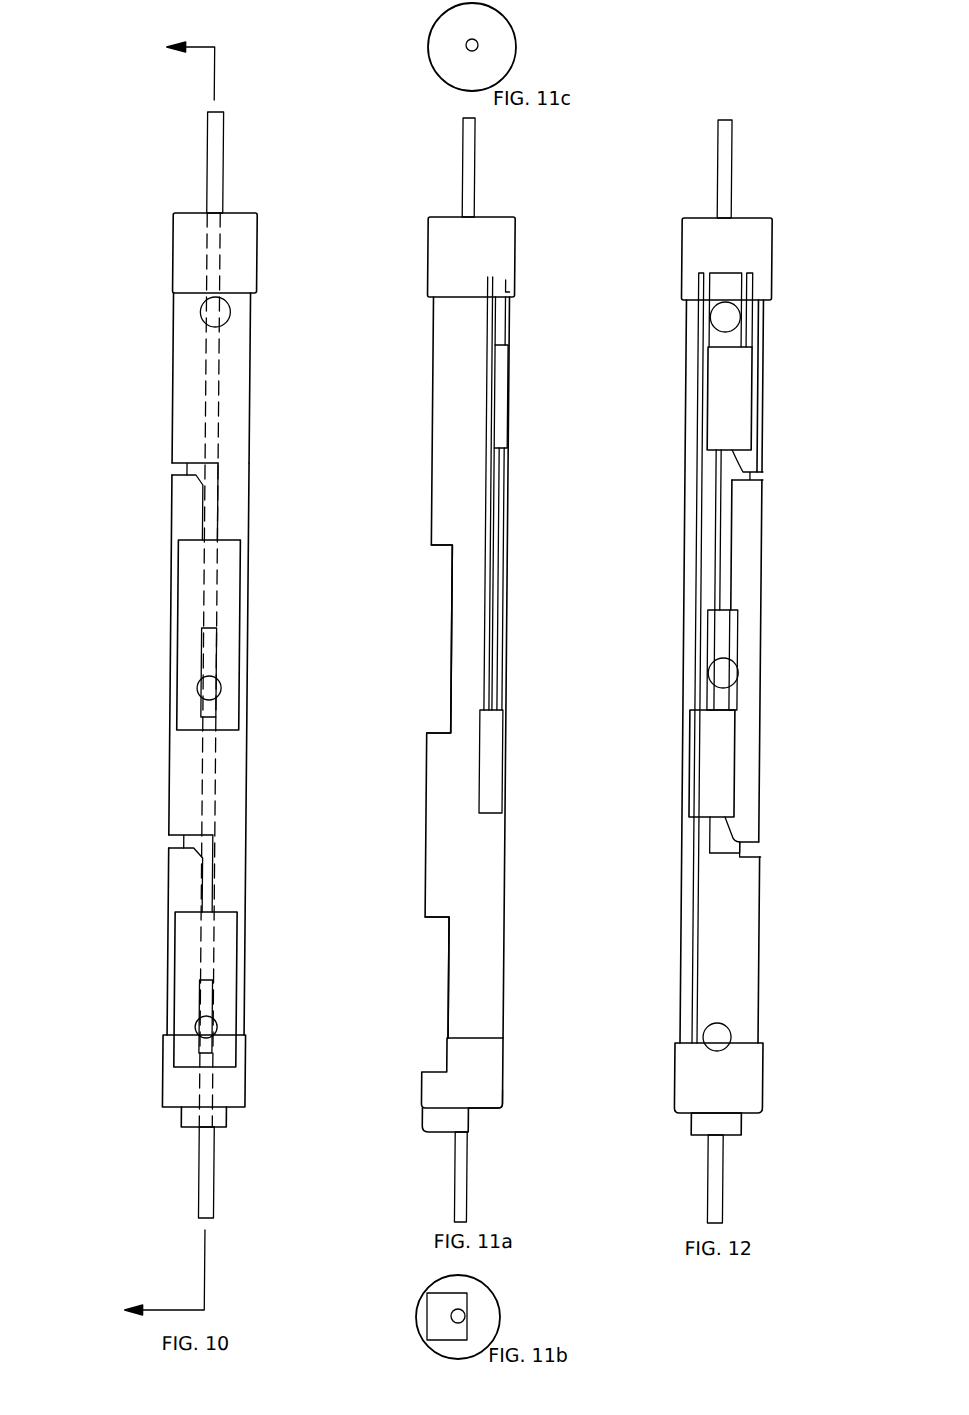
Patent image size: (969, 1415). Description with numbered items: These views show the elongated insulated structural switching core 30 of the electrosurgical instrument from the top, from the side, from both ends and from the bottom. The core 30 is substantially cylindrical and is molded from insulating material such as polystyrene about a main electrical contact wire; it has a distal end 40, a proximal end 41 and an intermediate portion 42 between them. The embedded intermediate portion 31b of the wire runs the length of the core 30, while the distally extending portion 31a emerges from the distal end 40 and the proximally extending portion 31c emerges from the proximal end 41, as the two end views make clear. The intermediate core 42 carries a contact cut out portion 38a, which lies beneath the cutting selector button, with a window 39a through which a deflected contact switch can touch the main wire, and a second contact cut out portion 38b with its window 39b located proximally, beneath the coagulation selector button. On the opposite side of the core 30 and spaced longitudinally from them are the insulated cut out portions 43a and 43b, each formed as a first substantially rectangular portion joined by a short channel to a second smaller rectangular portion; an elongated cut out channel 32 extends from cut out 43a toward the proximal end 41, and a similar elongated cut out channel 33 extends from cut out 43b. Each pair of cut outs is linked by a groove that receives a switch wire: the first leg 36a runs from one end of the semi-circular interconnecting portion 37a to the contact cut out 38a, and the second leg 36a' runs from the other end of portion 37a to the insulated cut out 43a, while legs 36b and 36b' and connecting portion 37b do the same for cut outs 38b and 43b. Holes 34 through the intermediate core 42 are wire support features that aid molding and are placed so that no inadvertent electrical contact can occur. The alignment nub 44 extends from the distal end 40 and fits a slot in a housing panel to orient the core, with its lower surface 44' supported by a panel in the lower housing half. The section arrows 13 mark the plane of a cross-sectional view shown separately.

In FIG. 10, the section line 13- 13 is at (154, 679).
In FIG. 10, the insulated structural switching core 30 is at (138, 921).
In FIG. 11C, the insulated structural switching core 30 is at (440, 52).
In FIG. 11A, the insulated structural switching core 30 is at (413, 815).
In FIG. 11B, the insulated structural switching core 30 is at (484, 1312).
In FIG. 12, the insulated structural switching core 30 is at (635, 930).
In FIG. 10, the distally extending portion of main contact wire 31a is at (202, 1167).
In FIG. 11B, the distally extending portion of main contact wire 31a is at (462, 1310).
In FIG. 10, the intermediate portion of main wire 31b is at (200, 758).
In FIG. 10, the proximally extending portion of main contact wire 31c is at (207, 162).
In FIG. 11C, the proximally extending portion of main contact wire 31c is at (480, 47).
In FIG. 11A, the elongated cut out channel 32 is at (480, 330).
In FIG. 12, the elongated cut out channel 32 is at (697, 512).
In FIG. 12, the elongated cut out channel 33 is at (750, 322).
In FIG. 12, the holes 34 is at (712, 318).
In FIG. 10, the first leg of groove 36a is at (134, 873).
In FIG. 10, the leg of second groove 36b is at (145, 501).
In FIG. 12, the second leg of groove 36a' is at (661, 851).
In FIG. 12, the leg of second groove 36b' is at (647, 530).
In FIG. 10, the interconnecting portion 37a is at (178, 840).
In FIG. 12, the interconnecting portion 37a is at (765, 847).
In FIG. 10, the connecting portion 37b is at (180, 470).
In FIG. 12, the connecting portion 37b is at (758, 478).
In FIG. 10, the contact cut out portion 38a is at (195, 990).
In FIG. 11A, the contact cut out portion 38a is at (440, 952).
In FIG. 10, the second contact cut out portion 38b is at (190, 568).
In FIG. 11A, the second contact cut out portion 38b is at (440, 570).
In FIG. 10, the window 39a is at (207, 1002).
In FIG. 10, the window 39b is at (208, 650).
In FIG. 10, the distal end 40 is at (182, 1085).
In FIG. 11A, the distal end 40 is at (472, 1072).
In FIG. 10, the proximal end 41 is at (184, 242).
In FIG. 11A, the proximal end 41 is at (445, 245).
In FIG. 10, the intermediate portion 42 is at (225, 355).
In FIG. 11A, the insulated cut out portion 43a is at (488, 748).
In FIG. 12, the insulated cut out portion 43a is at (720, 625).
In FIG. 11A, the second insulated cut out portion 43b is at (500, 380).
In FIG. 12, the second insulated cut out portion 43b is at (728, 278).
In FIG. 10, the alignment nub 44 is at (234, 1122).
In FIG. 11A, the alignment nub 44 is at (405, 1139).
In FIG. 11B, the alignment nub 44 is at (403, 1307).
In FIG. 12, the alignment nub 44 is at (685, 1148).
In FIG. 11A, the lower surface of nub 44' is at (510, 1118).